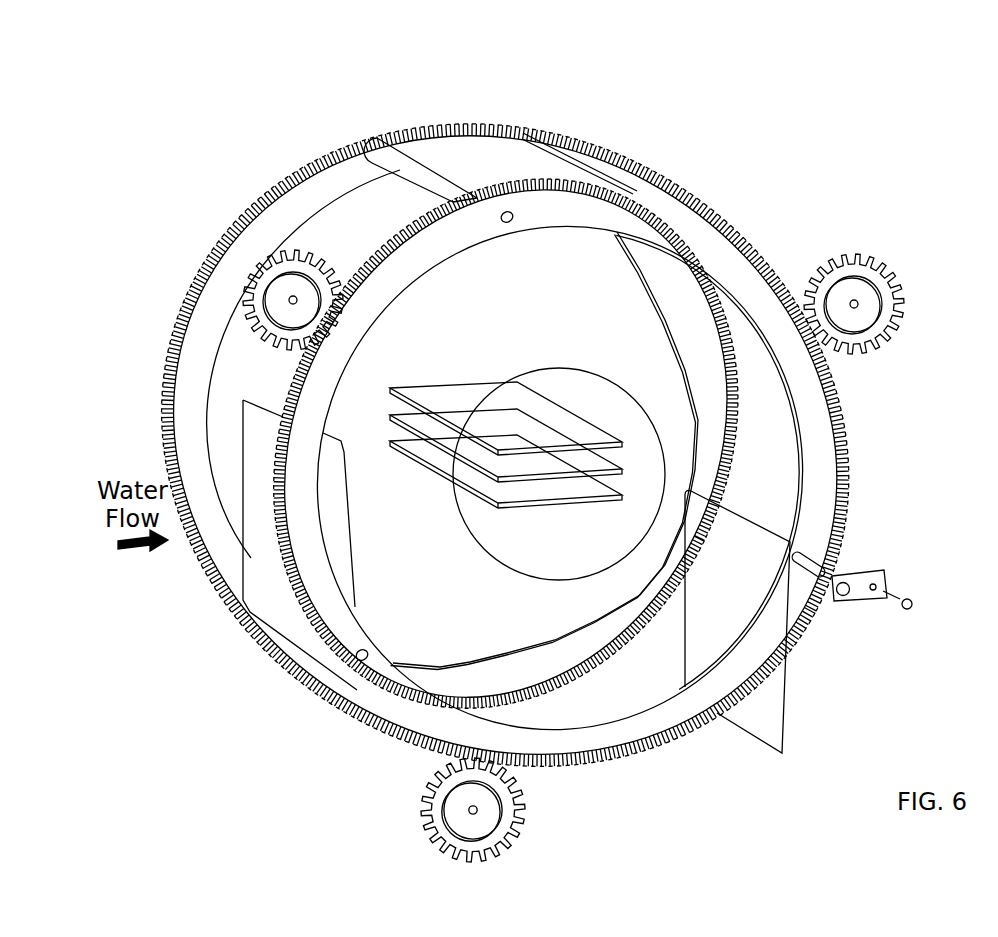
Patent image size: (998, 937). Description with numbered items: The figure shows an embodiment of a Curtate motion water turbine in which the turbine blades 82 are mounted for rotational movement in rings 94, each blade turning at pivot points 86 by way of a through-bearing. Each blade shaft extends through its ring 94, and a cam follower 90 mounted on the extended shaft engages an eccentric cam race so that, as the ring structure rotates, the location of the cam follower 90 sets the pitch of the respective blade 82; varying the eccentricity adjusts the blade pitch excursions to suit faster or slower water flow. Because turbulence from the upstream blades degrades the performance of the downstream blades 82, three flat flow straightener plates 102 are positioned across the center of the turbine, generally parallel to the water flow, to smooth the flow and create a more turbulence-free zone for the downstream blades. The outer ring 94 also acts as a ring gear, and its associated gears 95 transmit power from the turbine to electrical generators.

The blades 82 is at (520, 157).
The pivot points 86 is at (803, 568).
The cam follower 90 is at (907, 611).
The rings 94 is at (598, 162).
The gears 95 is at (280, 346).
The flat flow straightener plates 102 is at (473, 382).